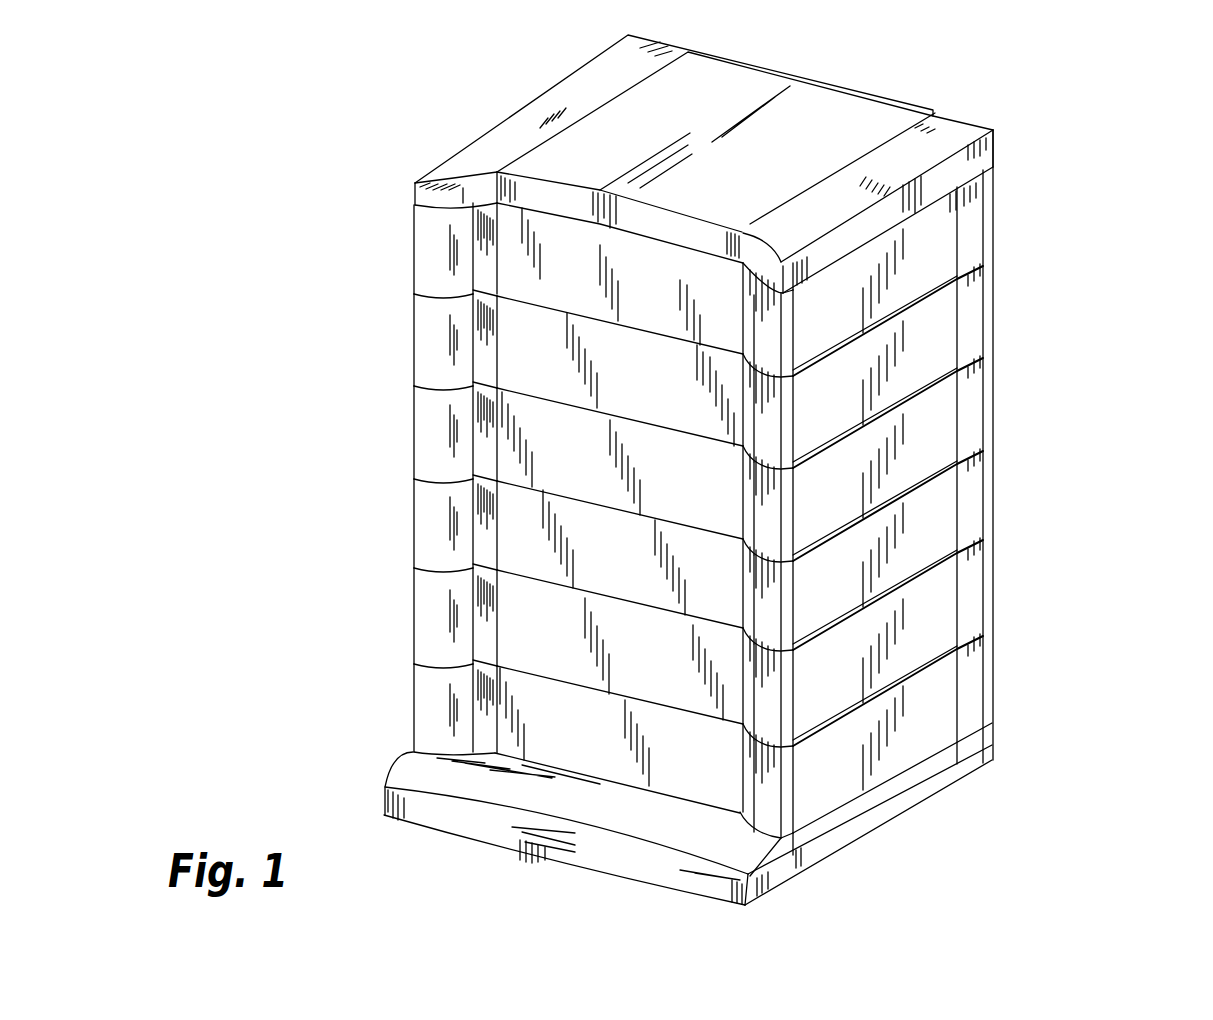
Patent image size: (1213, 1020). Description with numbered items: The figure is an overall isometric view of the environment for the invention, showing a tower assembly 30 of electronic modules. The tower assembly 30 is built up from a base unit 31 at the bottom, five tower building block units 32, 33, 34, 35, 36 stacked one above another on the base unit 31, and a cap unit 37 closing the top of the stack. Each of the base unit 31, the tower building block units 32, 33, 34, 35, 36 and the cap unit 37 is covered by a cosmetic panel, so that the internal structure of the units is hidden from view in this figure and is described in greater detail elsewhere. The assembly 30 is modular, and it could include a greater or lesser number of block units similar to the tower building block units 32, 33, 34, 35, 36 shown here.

The tower assembly 30 is at (1072, 413).
The base unit 31 is at (423, 702).
The tower building block unit 32 is at (422, 615).
The tower building block unit 33 is at (430, 530).
The tower building block unit 34 is at (423, 442).
The tower building block unit 35 is at (430, 347).
The tower building block unit 36 is at (423, 265).
The cap unit 37 is at (510, 130).